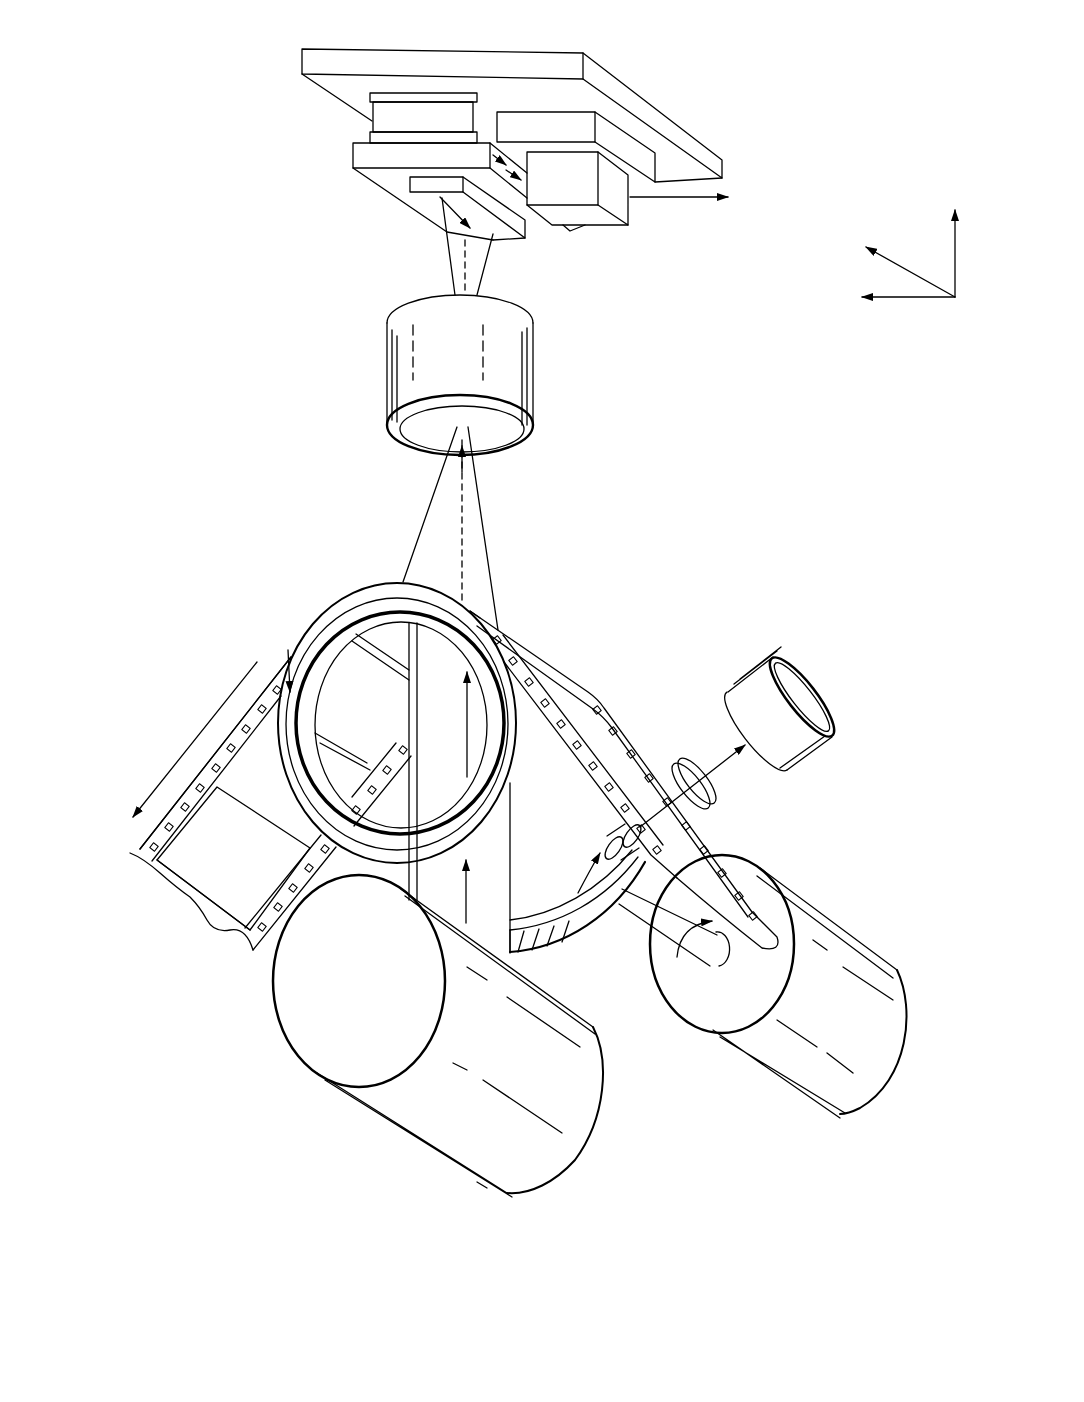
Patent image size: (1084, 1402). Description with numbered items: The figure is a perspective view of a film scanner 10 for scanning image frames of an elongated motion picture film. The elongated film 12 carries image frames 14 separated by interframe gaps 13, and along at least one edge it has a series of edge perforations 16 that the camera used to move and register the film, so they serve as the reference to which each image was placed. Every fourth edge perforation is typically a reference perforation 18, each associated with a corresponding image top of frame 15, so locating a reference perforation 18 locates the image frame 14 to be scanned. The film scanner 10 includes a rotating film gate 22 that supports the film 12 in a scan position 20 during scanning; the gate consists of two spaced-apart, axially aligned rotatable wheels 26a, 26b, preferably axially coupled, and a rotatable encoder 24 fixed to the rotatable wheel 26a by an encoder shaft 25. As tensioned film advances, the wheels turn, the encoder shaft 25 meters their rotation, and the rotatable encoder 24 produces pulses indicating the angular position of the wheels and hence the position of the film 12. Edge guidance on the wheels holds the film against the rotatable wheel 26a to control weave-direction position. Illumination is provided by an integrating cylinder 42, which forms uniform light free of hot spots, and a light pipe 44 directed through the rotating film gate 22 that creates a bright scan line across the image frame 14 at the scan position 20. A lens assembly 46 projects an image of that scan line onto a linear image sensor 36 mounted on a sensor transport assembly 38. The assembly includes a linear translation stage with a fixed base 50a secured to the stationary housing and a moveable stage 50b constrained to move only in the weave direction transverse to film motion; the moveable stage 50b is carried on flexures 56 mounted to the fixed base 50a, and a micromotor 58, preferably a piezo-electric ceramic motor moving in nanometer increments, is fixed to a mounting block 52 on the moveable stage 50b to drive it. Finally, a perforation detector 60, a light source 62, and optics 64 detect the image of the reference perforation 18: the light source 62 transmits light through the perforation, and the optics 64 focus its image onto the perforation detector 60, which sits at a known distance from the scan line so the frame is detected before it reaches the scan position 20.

The film scanner 10 is at (852, 600).
The elongated film 12 is at (207, 927).
The interframe gaps 13 is at (197, 778).
The image frames 14 is at (425, 795).
The image top of frame 15 is at (232, 920).
The edge perforations 16 is at (147, 848).
The reference perforation 18 is at (325, 877).
The scan position 20 is at (480, 623).
The rotating film gate 22 is at (303, 616).
The rotatable encoder 24 is at (853, 938).
The encoder shaft 25 is at (652, 950).
The rotatable wheel 26a is at (578, 940).
The rotatable wheel 26b is at (367, 582).
The linear image sensor 36 is at (420, 183).
The sensor transport assembly 38 is at (257, 108).
The integrating cylinder 42 is at (590, 1133).
The light pipe 44 is at (513, 857).
The lens assembly 46 is at (524, 372).
The fixed base 50a is at (505, 59).
The moveable stage 50b is at (363, 155).
The mounting block 52 is at (632, 146).
The flexures 56 is at (382, 117).
The micromotor 58 is at (590, 219).
The perforation detector 60 is at (742, 677).
The light source 62 is at (615, 840).
The optics 64 is at (677, 760).